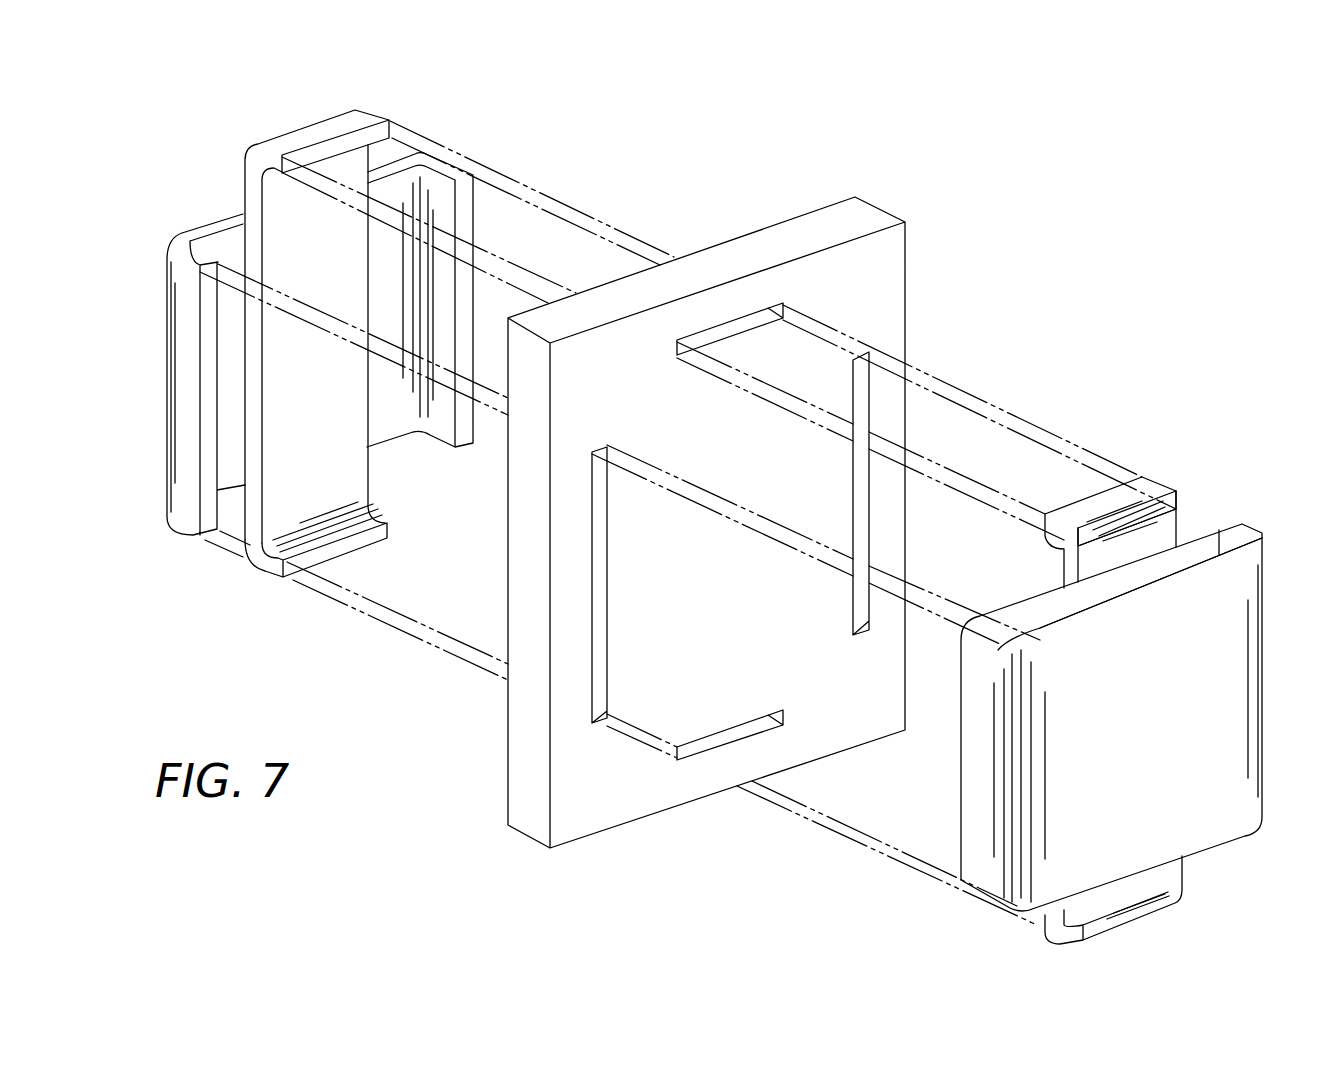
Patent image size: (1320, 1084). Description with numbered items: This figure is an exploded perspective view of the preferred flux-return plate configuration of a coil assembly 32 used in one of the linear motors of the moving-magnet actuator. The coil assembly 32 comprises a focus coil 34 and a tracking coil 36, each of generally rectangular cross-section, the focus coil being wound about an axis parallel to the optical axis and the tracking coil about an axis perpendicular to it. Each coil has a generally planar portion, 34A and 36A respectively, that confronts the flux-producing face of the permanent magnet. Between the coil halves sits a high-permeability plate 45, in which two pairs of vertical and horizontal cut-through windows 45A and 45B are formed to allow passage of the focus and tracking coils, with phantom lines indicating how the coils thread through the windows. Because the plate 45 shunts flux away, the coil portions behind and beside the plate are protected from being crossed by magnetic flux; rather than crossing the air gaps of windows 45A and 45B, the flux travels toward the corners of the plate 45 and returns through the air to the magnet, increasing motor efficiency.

The coil assembly 32 is at (783, 514).
The focus coil 34 is at (184, 237).
The planar portion of focus coil 34A is at (1224, 826).
The tracking coil 36 is at (372, 117).
The planar portion of tracking coil 36A is at (1172, 528).
The plate 45 is at (742, 522).
The vertical cut-through windows 45A is at (852, 489).
The horizontal cut-through windows 45B is at (756, 330).